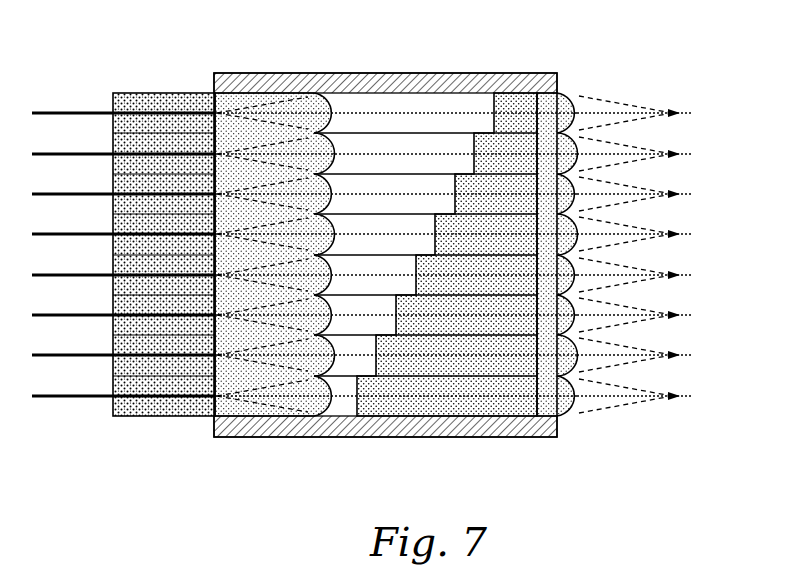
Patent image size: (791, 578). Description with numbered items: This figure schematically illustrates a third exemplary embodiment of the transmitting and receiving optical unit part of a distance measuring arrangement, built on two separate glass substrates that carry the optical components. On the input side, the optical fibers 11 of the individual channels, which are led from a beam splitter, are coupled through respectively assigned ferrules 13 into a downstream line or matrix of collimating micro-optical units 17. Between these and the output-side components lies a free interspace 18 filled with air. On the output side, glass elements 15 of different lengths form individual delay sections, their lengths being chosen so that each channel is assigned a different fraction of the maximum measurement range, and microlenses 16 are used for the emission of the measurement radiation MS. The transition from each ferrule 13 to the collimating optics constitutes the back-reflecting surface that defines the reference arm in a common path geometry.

The optical fibers 11 is at (123, 290).
The ferrules 13 is at (144, 230).
The glass elements 15 is at (447, 288).
The microlenses 16 is at (515, 223).
The collimating micro-optical units 17 is at (255, 224).
The free interspace 18 is at (385, 235).
The measurement radiation MS is at (635, 241).